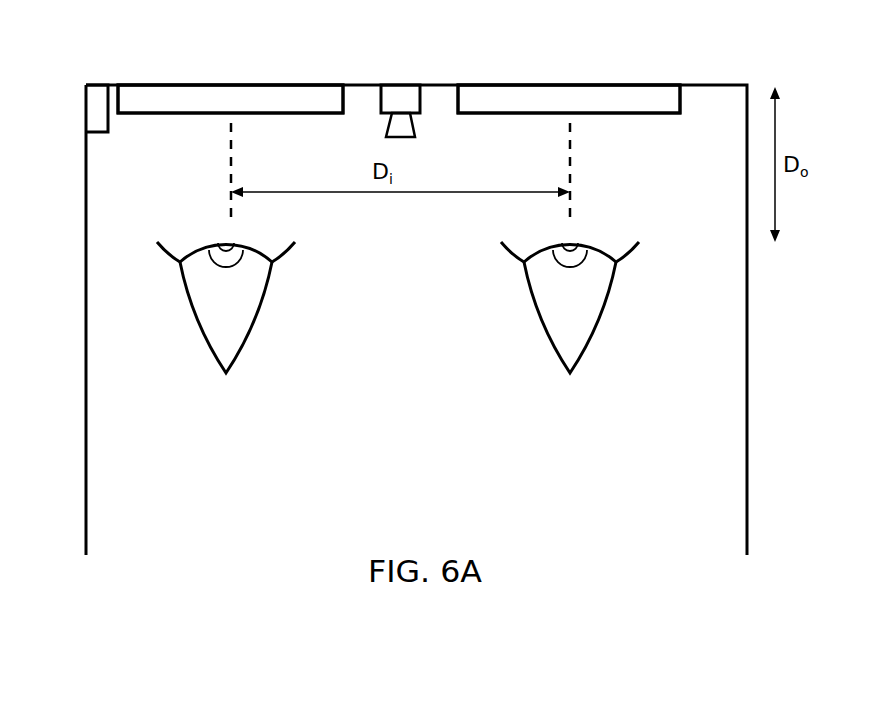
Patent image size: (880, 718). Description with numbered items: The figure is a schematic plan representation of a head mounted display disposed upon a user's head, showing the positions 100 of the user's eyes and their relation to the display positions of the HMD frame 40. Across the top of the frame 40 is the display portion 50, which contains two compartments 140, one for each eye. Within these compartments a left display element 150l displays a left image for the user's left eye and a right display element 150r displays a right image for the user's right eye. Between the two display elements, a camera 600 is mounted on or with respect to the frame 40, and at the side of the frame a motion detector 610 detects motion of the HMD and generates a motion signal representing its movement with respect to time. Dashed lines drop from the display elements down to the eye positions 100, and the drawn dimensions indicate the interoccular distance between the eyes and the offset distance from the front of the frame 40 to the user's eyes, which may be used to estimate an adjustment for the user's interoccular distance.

The frame 40 is at (82, 297).
The display portion 50 is at (723, 83).
The motion detector 610 is at (99, 100).
The compartments 140 is at (343, 77).
The left display element 150l is at (185, 100).
The right display element 150r is at (620, 105).
The camera 600 is at (400, 100).
The positions of the user's eyes 100 is at (218, 348).